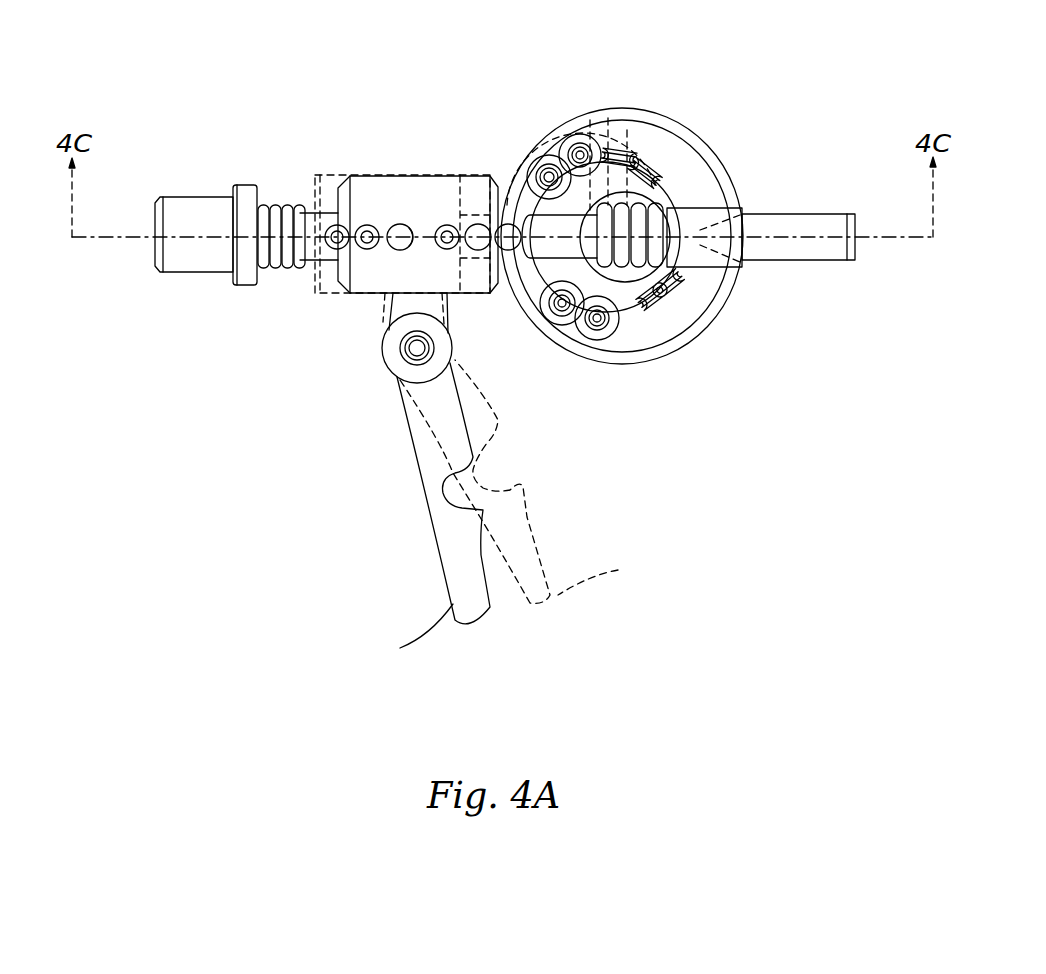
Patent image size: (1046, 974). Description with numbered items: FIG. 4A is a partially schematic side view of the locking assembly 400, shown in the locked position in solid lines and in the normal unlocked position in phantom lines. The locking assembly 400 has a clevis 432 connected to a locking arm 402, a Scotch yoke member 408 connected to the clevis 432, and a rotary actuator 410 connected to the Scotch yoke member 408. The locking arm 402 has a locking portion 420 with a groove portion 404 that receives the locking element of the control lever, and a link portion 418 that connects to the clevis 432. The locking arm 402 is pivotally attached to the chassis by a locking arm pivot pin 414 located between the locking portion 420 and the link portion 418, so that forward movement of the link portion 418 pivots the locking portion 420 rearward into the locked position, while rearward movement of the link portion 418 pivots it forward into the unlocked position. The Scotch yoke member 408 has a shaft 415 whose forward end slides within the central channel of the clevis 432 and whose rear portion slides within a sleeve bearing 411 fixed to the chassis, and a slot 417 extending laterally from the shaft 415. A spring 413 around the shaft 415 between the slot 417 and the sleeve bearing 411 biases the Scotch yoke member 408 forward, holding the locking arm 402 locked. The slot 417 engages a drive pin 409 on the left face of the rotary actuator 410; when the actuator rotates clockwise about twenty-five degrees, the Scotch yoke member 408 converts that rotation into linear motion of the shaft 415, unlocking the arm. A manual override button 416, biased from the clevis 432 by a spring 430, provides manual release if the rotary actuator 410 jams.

The locking assembly 400 is at (372, 386).
The locking arm 402 is at (381, 452).
The groove portion 404 is at (491, 470).
The Scotch yoke member 408 is at (526, 98).
The drive pin 409 is at (533, 148).
The rotary actuator 410 is at (667, 113).
The sleeve bearing 411 is at (727, 257).
The spring 413 is at (650, 200).
The locking arm pivot pin 414 is at (453, 362).
The shaft 415 is at (773, 210).
The manual override button 416 is at (203, 220).
The slot 417 is at (577, 100).
The link portion 418 is at (385, 305).
The locking portion 420 is at (445, 545).
The spring 430 is at (283, 213).
The clevis 432 is at (327, 178).